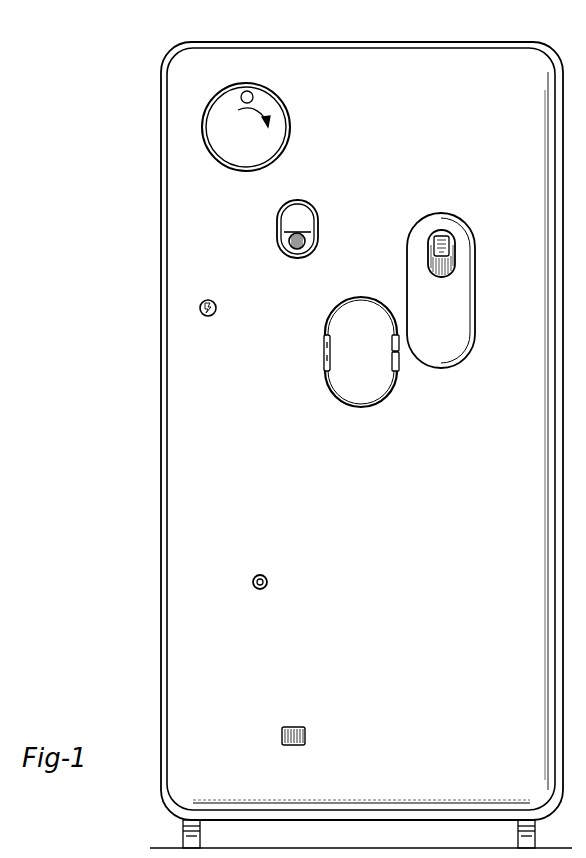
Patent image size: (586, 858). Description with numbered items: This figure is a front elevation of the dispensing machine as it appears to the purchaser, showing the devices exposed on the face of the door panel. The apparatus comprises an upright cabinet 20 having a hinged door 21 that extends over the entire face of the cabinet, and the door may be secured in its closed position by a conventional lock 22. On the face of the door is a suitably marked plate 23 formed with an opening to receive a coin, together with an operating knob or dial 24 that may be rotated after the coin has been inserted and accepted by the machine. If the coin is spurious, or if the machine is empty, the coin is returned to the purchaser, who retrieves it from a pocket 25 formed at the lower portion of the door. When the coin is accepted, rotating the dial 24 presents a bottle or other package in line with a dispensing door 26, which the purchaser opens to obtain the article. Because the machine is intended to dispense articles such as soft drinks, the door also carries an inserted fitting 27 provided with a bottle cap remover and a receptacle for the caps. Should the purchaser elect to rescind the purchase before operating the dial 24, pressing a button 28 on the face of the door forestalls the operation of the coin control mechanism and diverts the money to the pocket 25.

The cabinet 20 is at (161, 418).
The hinged door 21 is at (172, 505).
The lock 22 is at (200, 303).
The marked plate 23 is at (282, 222).
The operating knob or dial 24 is at (291, 122).
The pocket 25 is at (282, 740).
The dispensing door 26 is at (347, 386).
The inserted fitting 27 is at (468, 291).
The button 28 is at (253, 577).